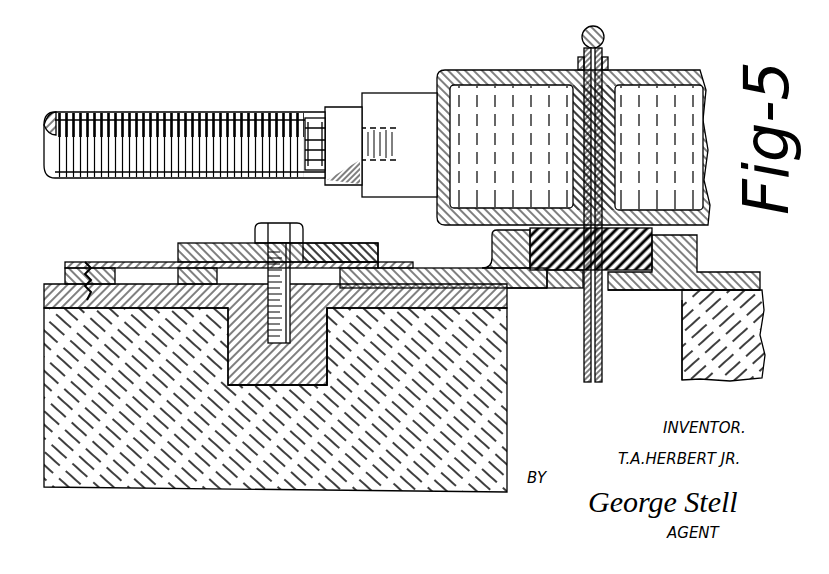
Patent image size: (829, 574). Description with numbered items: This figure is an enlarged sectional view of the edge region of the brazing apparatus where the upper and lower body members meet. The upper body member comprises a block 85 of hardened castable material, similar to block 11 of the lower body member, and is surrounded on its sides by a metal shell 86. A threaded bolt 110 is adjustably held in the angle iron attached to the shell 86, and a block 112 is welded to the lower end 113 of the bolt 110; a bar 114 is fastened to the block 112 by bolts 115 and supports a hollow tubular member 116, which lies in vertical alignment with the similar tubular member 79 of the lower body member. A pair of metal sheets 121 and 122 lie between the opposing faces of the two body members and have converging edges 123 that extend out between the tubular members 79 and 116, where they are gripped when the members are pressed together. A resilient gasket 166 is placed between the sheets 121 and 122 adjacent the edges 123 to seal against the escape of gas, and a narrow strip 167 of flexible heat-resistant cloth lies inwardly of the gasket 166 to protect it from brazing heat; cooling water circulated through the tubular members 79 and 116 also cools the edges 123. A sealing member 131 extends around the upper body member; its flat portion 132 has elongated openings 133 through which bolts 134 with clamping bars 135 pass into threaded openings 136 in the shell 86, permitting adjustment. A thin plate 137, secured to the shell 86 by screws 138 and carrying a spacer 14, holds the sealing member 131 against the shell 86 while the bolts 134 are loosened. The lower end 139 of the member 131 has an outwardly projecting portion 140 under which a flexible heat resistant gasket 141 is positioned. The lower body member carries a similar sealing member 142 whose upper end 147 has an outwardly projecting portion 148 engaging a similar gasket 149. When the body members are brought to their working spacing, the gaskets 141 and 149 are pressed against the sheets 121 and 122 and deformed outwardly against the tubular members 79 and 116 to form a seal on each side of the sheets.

The block 11 is at (682, 352).
The spacer 14 is at (62, 268).
The tubular member 79 is at (668, 47).
The block 85 is at (173, 488).
The metal shell 86 is at (44, 288).
The threaded bolt 110 is at (146, 82).
The block 112 is at (344, 72).
The lower end 113 is at (321, 82).
The bar 114 is at (379, 60).
The bolt 115 is at (306, 82).
The hollow tubular member 116 is at (506, 42).
The metal sheet 121 is at (584, 312).
The metal sheet 122 is at (603, 330).
The converging edges 123 is at (579, 60).
The sealing member 131 is at (446, 258).
The flat portion 132 is at (393, 265).
The elongated openings 133 is at (228, 230).
The bolt 134 is at (257, 210).
The clamping bar 135 is at (323, 228).
The threaded opening 136 is at (294, 310).
The thin plate 137 is at (134, 262).
The screw 138 is at (90, 262).
The lower end 139 is at (520, 288).
The outwardly projecting portion 140 is at (493, 250).
The flexible heat resistant gasket 141 is at (560, 289).
The sealing member 142 is at (765, 291).
The upper end 147 is at (645, 291).
The outwardly projecting portion 148 is at (698, 250).
The flexible heat resistant gasket 149 is at (660, 291).
The resilient gasket 166 is at (590, 27).
The narrow strip 167 is at (610, 190).